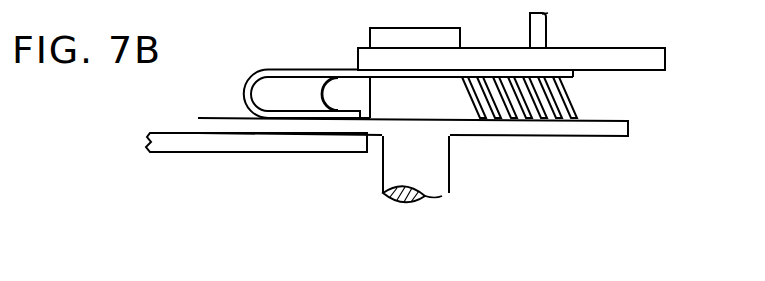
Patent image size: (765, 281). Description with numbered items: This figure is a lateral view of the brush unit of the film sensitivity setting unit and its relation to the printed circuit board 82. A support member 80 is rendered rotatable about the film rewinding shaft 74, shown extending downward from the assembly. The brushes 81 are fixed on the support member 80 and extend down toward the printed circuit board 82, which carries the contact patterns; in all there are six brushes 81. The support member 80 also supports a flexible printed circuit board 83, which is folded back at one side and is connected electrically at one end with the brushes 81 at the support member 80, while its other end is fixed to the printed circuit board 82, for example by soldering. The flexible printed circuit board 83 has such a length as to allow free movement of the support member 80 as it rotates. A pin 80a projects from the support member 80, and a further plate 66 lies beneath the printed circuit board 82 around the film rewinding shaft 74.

The substrate plate 66 is at (309, 149).
The film rewinding shaft 74 is at (437, 168).
The support member 80 is at (657, 60).
The locating pin 80a is at (540, 32).
The brushes 81 is at (481, 118).
The printed circuit board 82 is at (630, 127).
The flexible printed circuit board 83 is at (270, 72).